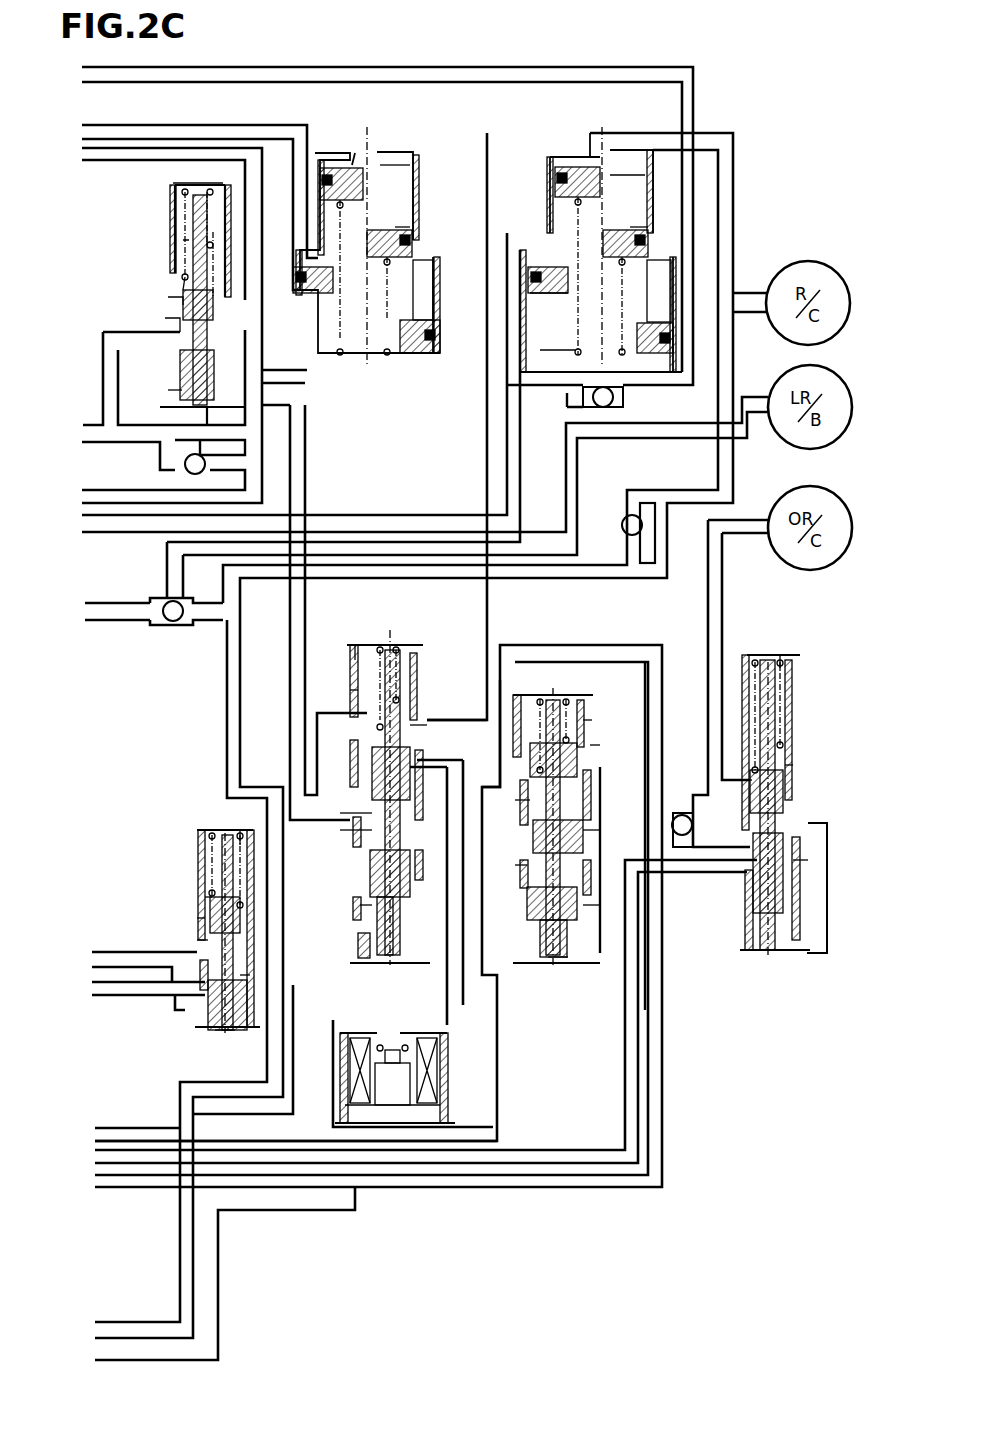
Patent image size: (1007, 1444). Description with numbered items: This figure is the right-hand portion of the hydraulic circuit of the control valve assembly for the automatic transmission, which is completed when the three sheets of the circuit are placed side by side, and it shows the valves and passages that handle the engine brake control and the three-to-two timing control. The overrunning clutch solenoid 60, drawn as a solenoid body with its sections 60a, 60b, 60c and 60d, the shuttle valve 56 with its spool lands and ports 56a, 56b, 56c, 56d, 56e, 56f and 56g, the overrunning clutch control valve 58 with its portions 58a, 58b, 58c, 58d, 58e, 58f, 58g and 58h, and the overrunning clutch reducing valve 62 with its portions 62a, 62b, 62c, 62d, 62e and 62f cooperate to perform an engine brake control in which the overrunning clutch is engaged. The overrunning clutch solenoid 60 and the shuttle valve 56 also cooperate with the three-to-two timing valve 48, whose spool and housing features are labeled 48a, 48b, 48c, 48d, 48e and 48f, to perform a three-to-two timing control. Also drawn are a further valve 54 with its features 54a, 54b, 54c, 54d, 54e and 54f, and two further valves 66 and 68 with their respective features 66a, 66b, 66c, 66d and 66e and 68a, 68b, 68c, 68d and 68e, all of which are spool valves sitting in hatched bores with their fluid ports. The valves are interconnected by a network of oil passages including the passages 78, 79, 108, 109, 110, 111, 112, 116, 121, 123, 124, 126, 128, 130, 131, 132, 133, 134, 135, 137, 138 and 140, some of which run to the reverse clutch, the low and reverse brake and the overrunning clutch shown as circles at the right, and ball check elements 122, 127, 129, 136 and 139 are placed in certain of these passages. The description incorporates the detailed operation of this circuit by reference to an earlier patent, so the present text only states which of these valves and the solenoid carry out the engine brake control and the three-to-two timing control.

The 3-2 timing valve 48 is at (152, 247).
The valve port 48a is at (178, 196).
The valve land 48b is at (180, 278).
The valve port 48c is at (170, 305).
The valve port 48d is at (172, 338).
The valve port 48e is at (168, 392).
The valve port 48f is at (130, 334).
The valve 54 is at (210, 825).
The valve port 54a is at (250, 845).
The valve land 54b is at (208, 896).
The valve port 54c is at (205, 950).
The valve port 54d is at (250, 975).
The valve port 54e is at (200, 918).
The valve port 54f is at (212, 1032).
The shuttle valve 56 is at (368, 640).
The valve port 56a is at (398, 650).
The valve port 56b is at (358, 690).
The valve port 56c is at (352, 875).
The valve port 56d is at (410, 742).
The valve port 56e is at (365, 812).
The valve port 56f is at (362, 830).
The valve port 56g is at (358, 660).
The overrunning clutch control valve 58 is at (543, 690).
The valve port 58a is at (568, 700).
The valve port 58b is at (588, 725).
The valve port 58c is at (570, 965).
The valve port 58d is at (527, 808).
The valve port 58e is at (600, 820).
The valve port 58f is at (600, 880).
The valve port 58g is at (522, 878).
The valve port 58h is at (590, 750).
The overrunning clutch solenoid 60 is at (455, 1030).
The valve port 60a is at (440, 1105).
The plunger 60b is at (412, 1082).
The spring 60c is at (440, 1055).
The valve port 60d is at (415, 1035).
The overrunning clutch reducing valve 62 is at (730, 960).
The valve port 62a is at (790, 694).
The valve port 62b is at (795, 765).
The valve port 62c is at (748, 880).
The valve port 62d is at (808, 862).
The valve port 62e is at (745, 775).
The valve port 62f is at (785, 955).
The valve 66 is at (340, 145).
The valve land 66a is at (407, 230).
The valve port 66b is at (355, 357).
The valve chamber 66c is at (420, 297).
The valve chamber 66d is at (397, 188).
The valve port 66e is at (322, 357).
The valve 68 is at (550, 142).
The valve land 68a is at (645, 240).
The valve port 68b is at (578, 325).
The valve chamber 68c is at (658, 290).
The valve chamber 68d is at (622, 185).
The valve port 68e is at (572, 325).
The oil passage 78 is at (243, 124).
The oil passage 79 is at (304, 1188).
The oil passage 108 is at (192, 1030).
The oil passage 109 is at (497, 978).
The oil passage 110 is at (352, 1022).
The oil passage 111 is at (118, 532).
The oil passage 112 is at (257, 1128).
The oil passage 116 is at (533, 1188).
The oil passage 121 is at (262, 197).
The check valve 122 is at (180, 470).
The oil passage 123 is at (297, 332).
The oil passage 124 is at (90, 492).
The oil passage 126 is at (120, 622).
The check valve 127 is at (176, 622).
The oil passage 128 is at (735, 158).
The check valve 129 is at (672, 553).
The oil passage 130 is at (578, 463).
The oil passage 131 is at (103, 950).
The oil passage 132 is at (102, 997).
The oil passage 133 is at (290, 689).
The oil passage 134 is at (468, 735).
The oil passage 135 is at (505, 62).
The check valve 136 is at (648, 390).
The oil passage 137 is at (685, 875).
The oil passage 138 is at (708, 660).
The check valve 139 is at (676, 812).
The oil passage 140 is at (658, 646).